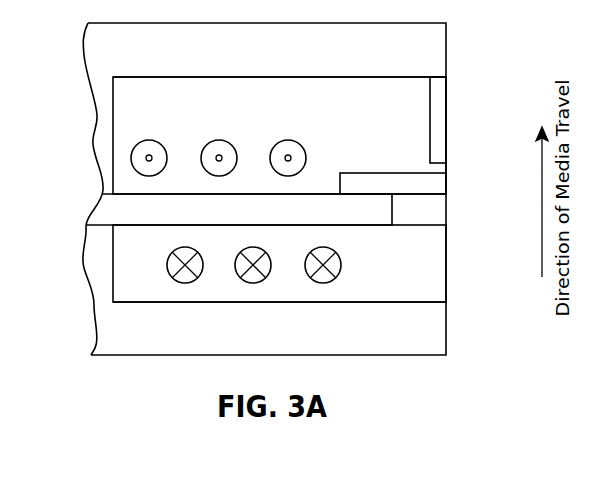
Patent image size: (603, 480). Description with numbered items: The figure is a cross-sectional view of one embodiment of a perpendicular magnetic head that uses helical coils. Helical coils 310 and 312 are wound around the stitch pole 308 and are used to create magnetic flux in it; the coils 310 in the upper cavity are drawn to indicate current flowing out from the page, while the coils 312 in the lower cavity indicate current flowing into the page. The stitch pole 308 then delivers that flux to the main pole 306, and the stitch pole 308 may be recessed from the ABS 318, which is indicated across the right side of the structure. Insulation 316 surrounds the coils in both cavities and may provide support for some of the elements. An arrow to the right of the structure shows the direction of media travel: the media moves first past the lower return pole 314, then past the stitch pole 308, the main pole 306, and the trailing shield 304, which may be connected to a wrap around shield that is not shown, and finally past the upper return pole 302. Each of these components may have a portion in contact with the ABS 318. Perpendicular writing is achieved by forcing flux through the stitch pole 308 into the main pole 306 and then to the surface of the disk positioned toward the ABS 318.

The upper return pole 302 is at (353, 59).
The trailing shield 304 is at (447, 120).
The main pole 306 is at (447, 181).
The stitch pole 308 is at (299, 220).
The helical coils (current out of page) 310 is at (148, 141).
The helical coils (current into page) 312 is at (168, 269).
The lower return pole 314 is at (298, 339).
The insulation 316 is at (393, 132).
The ABS (air bearing surface) 318 is at (447, 42).